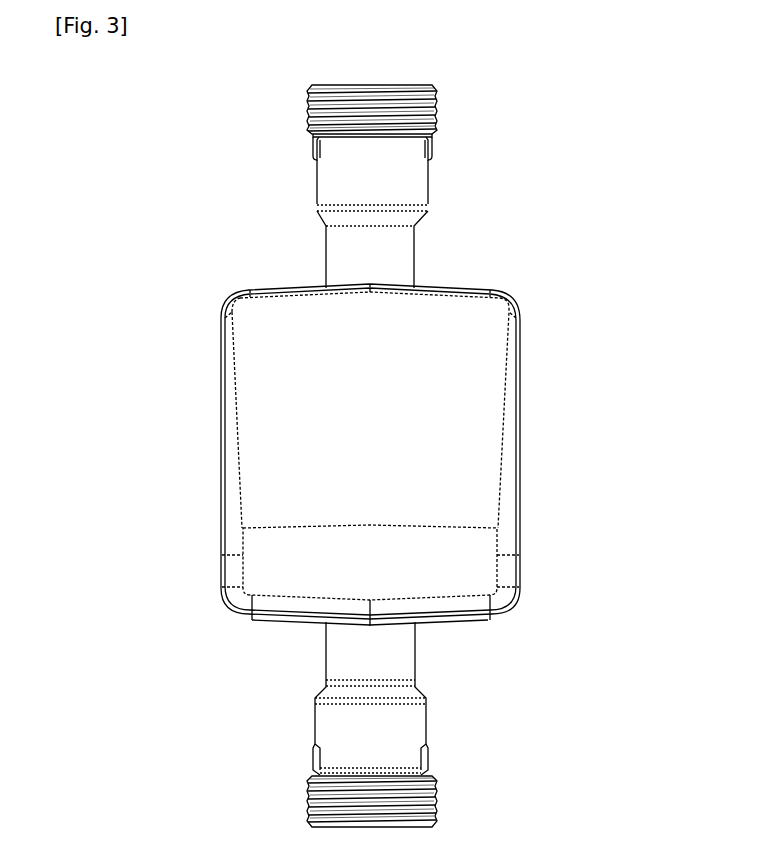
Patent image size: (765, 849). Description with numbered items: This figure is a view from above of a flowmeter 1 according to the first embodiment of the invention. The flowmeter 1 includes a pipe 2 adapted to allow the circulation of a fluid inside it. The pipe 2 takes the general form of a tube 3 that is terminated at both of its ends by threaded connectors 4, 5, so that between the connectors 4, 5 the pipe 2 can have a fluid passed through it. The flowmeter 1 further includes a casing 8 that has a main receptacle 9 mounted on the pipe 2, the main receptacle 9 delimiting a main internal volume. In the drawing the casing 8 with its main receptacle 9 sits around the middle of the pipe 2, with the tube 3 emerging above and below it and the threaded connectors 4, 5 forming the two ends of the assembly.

The flowmeter 1 is at (160, 352).
The pipe 2 is at (460, 200).
The tube 3 is at (400, 661).
The threaded connector 4 is at (450, 805).
The threaded connector 5 is at (455, 100).
The casing 8 is at (560, 383).
The main receptacle 9 is at (508, 473).